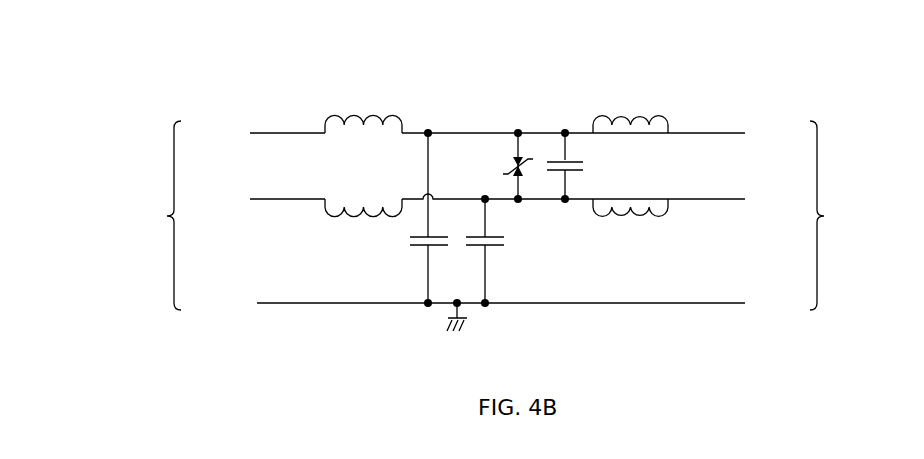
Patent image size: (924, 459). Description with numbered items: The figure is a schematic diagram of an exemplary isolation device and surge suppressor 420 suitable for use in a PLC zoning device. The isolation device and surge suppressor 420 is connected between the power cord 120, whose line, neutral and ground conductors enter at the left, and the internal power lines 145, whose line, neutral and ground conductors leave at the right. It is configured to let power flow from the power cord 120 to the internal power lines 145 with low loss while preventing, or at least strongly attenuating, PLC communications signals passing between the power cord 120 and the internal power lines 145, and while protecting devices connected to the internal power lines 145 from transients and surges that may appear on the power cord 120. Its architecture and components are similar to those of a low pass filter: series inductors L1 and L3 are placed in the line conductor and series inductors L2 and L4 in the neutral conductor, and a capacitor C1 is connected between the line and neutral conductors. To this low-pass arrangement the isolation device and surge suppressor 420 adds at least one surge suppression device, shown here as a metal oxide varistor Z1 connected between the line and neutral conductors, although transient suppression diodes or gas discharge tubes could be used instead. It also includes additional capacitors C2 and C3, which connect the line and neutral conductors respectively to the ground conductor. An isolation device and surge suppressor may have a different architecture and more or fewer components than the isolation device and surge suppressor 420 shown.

The isolation device and surge suppressor 420 is at (150, 46).
The power cord 120 is at (146, 215).
The internal power lines 145 is at (843, 215).
The inductor L1 is at (363, 111).
The inductor L2 is at (363, 223).
The inductor L3 is at (630, 111).
The inductor L4 is at (630, 223).
The capacitor C1 is at (581, 170).
The additional capacitor C2 is at (420, 218).
The additional capacitor C3 is at (502, 242).
The metal oxide varistor Z1 is at (504, 168).